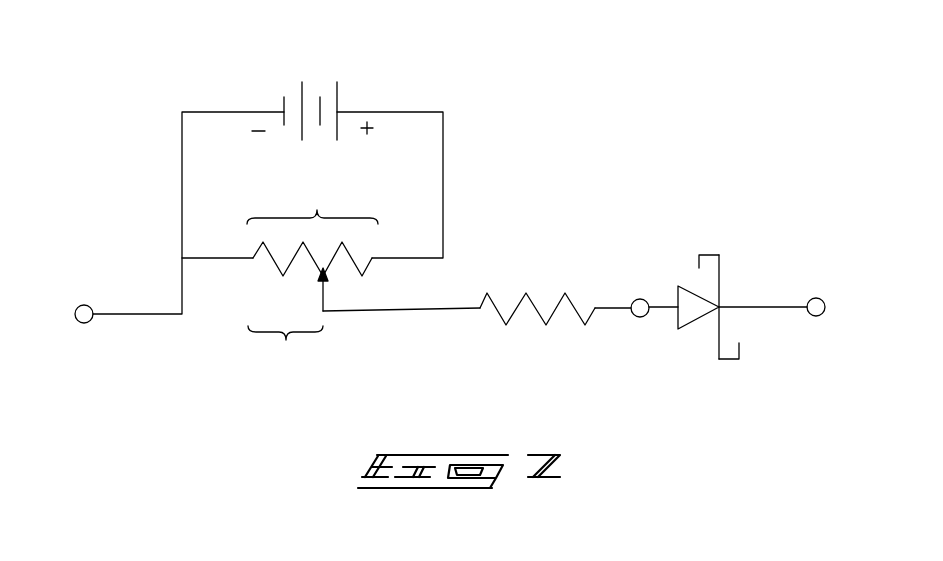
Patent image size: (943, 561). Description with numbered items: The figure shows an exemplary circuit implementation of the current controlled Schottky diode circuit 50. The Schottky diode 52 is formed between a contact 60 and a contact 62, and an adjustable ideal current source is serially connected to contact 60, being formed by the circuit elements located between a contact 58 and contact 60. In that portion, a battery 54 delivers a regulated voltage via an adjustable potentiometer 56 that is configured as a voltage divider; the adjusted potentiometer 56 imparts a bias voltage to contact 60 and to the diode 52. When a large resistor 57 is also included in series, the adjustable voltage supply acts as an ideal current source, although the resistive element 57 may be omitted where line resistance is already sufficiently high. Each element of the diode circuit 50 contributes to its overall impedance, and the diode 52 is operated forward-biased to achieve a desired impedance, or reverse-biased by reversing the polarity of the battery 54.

The current controlled Schottky diode circuit 50 is at (656, 131).
The Schottky diode 52 is at (722, 283).
The battery 54 is at (337, 94).
The adjustable potentiometer 56 is at (368, 265).
The resistor 57 is at (557, 303).
The contact 58 is at (79, 305).
The contact 60 is at (638, 317).
The contact 62 is at (820, 316).